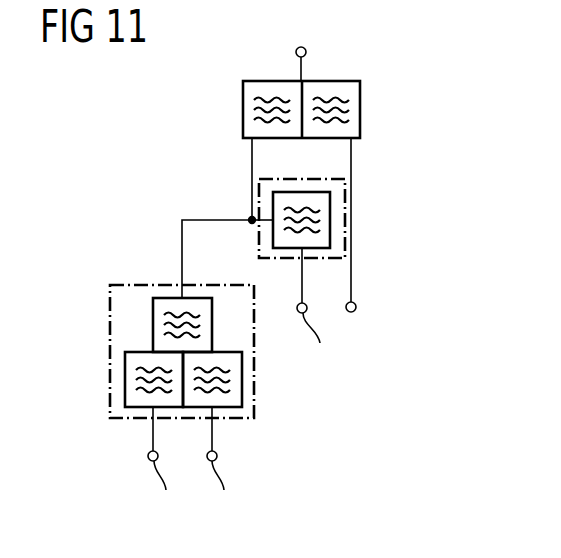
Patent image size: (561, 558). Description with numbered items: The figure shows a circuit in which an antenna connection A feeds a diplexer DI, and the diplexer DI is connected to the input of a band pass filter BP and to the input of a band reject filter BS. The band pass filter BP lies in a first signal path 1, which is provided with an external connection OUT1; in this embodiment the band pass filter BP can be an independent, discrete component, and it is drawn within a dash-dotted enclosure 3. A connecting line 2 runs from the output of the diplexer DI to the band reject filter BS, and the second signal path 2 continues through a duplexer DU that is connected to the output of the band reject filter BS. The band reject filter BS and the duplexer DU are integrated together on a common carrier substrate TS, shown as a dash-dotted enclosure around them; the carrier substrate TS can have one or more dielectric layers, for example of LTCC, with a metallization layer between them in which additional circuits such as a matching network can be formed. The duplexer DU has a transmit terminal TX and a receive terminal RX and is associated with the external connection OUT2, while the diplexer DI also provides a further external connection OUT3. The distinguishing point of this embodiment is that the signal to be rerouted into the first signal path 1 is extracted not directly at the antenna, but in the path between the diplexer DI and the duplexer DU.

The first signal path 1 is at (302, 278).
The second signal path 2 is at (200, 220).
The bandpass filter unit enclosure 3 is at (345, 220).
The antenna connection A is at (300, 49).
The diplexer DI is at (366, 108).
The band pass filter BP is at (273, 240).
The band reject filter BS is at (156, 295).
The carrier substrate TS is at (110, 350).
The duplexer DU is at (257, 398).
The external connection OUT1 is at (318, 339).
The external connection OUT2 is at (229, 457).
The output 3 OUT3 is at (356, 308).
The transmit terminal TX is at (164, 469).
The receive terminal RX is at (222, 469).